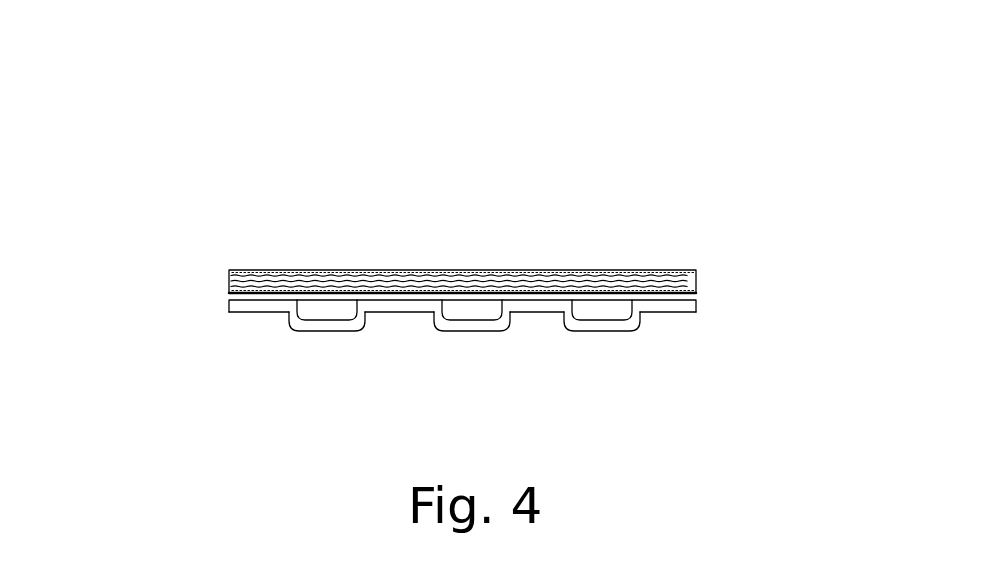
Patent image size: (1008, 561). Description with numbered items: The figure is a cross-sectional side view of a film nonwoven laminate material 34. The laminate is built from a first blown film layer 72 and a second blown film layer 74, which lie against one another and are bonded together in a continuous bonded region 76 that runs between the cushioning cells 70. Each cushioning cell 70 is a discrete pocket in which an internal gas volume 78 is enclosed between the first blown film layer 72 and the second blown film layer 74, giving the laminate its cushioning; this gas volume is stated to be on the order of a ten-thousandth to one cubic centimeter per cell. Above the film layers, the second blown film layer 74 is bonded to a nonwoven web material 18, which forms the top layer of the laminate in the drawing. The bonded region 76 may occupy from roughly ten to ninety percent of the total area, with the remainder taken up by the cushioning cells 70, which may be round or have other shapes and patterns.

The film nonwoven laminate material 34 is at (202, 235).
The nonwoven web material 18 is at (696, 275).
The second blown film layer 74 is at (228, 299).
The first blown film layer 72 is at (696, 309).
The continuous bonded region 76 is at (410, 300).
The internal gas volume 78 is at (317, 312).
The cushioning cells 70 is at (628, 326).